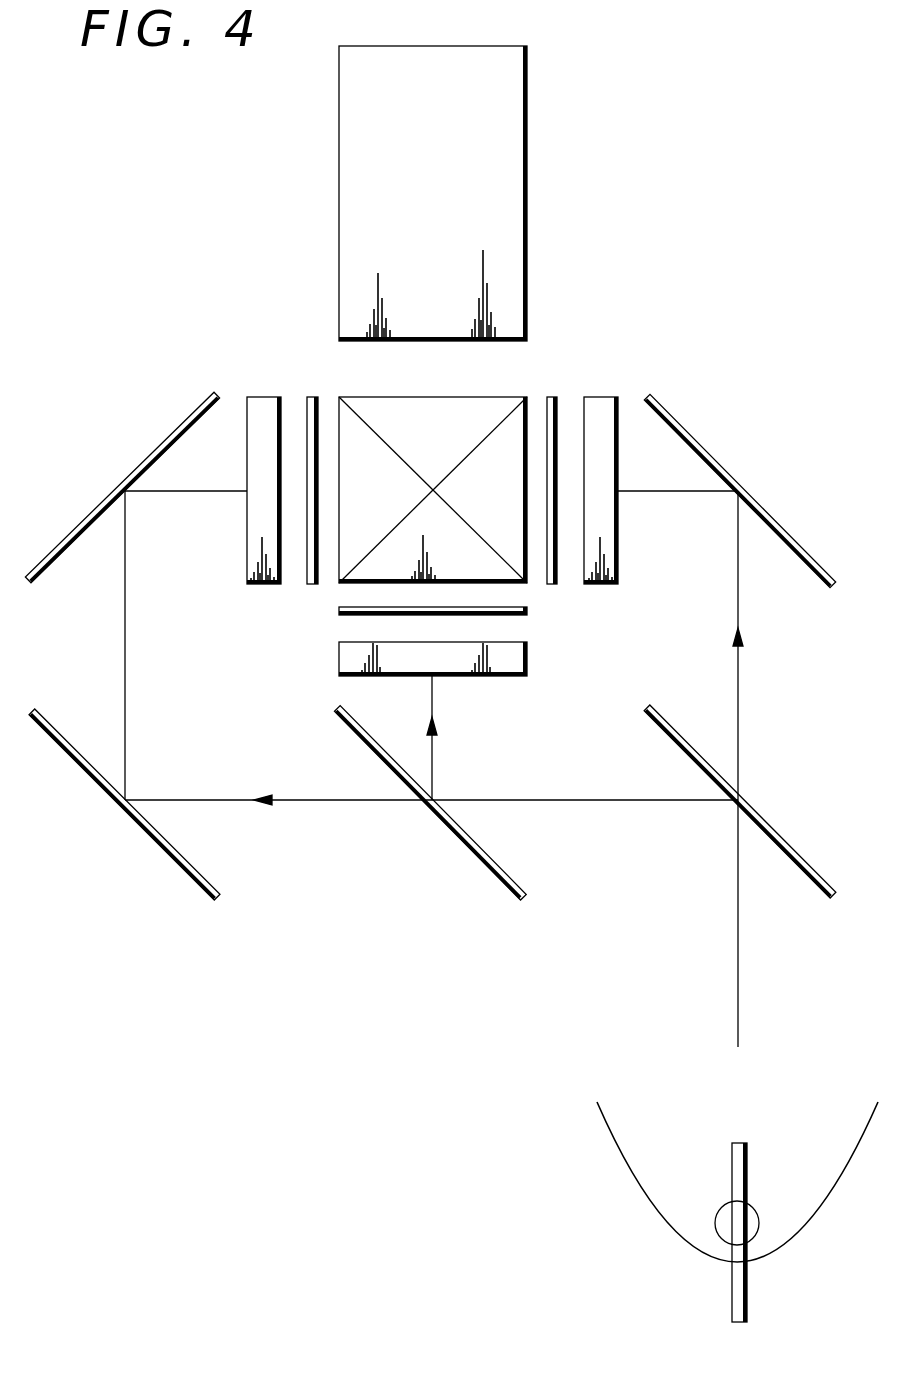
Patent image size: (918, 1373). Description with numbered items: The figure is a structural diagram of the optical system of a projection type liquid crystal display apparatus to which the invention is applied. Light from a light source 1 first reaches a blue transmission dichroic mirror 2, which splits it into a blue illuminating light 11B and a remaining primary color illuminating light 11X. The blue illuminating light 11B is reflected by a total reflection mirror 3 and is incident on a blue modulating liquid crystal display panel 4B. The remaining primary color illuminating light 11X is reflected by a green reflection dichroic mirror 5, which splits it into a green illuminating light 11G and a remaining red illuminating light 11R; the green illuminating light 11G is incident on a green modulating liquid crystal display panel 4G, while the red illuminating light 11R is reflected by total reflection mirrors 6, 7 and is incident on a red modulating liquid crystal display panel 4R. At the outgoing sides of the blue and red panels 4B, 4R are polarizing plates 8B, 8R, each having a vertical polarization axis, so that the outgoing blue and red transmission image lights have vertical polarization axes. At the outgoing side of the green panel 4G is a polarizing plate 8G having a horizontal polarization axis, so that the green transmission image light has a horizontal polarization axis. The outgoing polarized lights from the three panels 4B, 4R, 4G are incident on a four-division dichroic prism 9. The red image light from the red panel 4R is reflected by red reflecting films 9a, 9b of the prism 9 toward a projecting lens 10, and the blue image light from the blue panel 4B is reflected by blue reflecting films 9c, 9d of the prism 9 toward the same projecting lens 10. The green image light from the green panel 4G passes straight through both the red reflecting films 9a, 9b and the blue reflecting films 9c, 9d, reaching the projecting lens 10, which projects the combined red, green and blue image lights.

The light source 1 is at (692, 1216).
The blue transmission dichroic mirror 2 is at (787, 855).
The total reflection mirror 3 is at (750, 495).
The red modulating liquid crystal display panel 4R is at (262, 397).
The green modulating liquid crystal display panel 4G is at (527, 656).
The blue modulating liquid crystal display panel 4B is at (605, 397).
The green reflection dichroic mirror 5 is at (472, 850).
The total reflection mirror 6 is at (148, 835).
The total reflection mirror 7 is at (107, 496).
The polarizing plate 8R is at (311, 397).
The polarizing plate 8G is at (527, 611).
The polarizing plate 8B is at (553, 397).
The four-division dichroic prism 9 is at (397, 515).
The red reflecting film 9a is at (375, 546).
The red reflecting film 9b is at (455, 464).
The blue reflecting film 9c is at (398, 454).
The blue reflecting film 9d is at (488, 543).
The projecting lens 10 is at (527, 133).
The red illuminating light 11R is at (318, 800).
The green illuminating light 11G is at (432, 755).
The blue illuminating light 11B is at (738, 693).
The remaining primary color illuminating light 11X is at (632, 800).